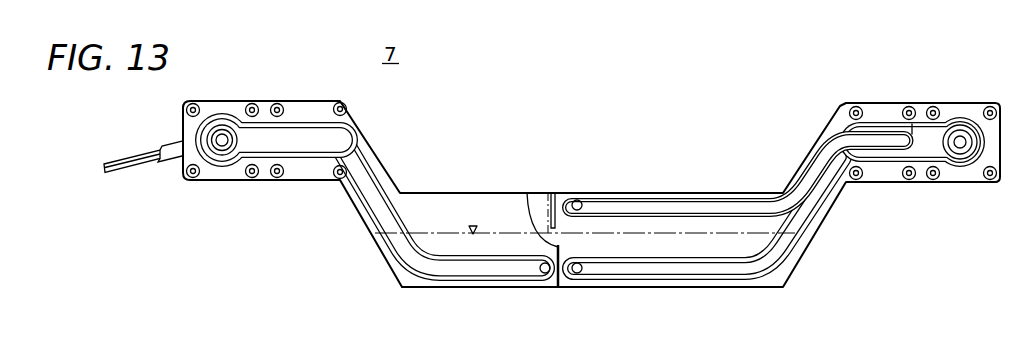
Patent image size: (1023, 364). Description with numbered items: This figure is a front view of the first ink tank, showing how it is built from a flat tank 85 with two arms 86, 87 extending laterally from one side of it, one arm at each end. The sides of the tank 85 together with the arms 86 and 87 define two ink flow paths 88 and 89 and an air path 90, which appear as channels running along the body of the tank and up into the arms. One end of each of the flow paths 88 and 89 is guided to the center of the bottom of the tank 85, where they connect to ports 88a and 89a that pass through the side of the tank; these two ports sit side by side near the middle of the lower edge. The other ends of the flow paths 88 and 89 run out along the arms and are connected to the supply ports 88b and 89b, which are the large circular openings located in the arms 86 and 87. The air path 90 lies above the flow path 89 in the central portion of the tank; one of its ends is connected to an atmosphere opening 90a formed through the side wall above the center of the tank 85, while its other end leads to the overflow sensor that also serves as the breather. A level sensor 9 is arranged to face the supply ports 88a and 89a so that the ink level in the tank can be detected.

The level sensor 9 is at (533, 200).
The flat tank 85 is at (437, 193).
The arm 86 is at (305, 182).
The arm 87 is at (915, 103).
The ink flow path 88 is at (452, 270).
The port 88a is at (545, 273).
The supply port 88b is at (221, 162).
The ink flow path 89 is at (722, 276).
The port 89a is at (578, 273).
The supply port 89b is at (955, 167).
The air path 90 is at (718, 199).
The atmosphere opening 90a is at (577, 200).